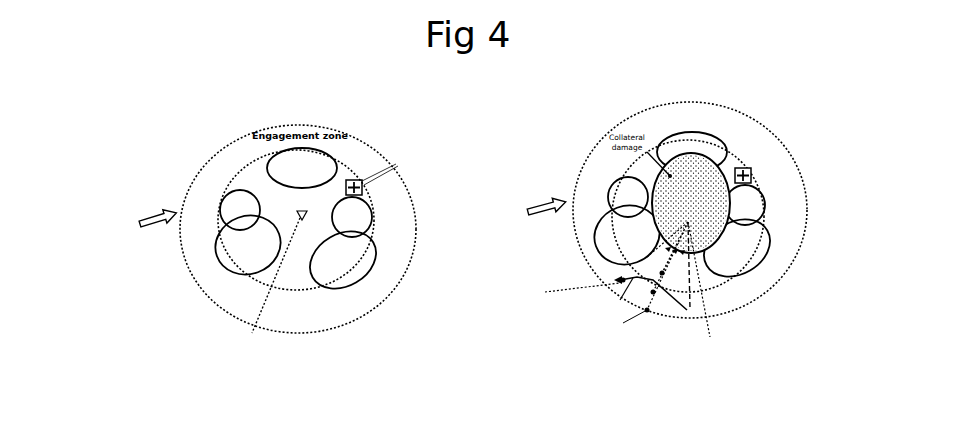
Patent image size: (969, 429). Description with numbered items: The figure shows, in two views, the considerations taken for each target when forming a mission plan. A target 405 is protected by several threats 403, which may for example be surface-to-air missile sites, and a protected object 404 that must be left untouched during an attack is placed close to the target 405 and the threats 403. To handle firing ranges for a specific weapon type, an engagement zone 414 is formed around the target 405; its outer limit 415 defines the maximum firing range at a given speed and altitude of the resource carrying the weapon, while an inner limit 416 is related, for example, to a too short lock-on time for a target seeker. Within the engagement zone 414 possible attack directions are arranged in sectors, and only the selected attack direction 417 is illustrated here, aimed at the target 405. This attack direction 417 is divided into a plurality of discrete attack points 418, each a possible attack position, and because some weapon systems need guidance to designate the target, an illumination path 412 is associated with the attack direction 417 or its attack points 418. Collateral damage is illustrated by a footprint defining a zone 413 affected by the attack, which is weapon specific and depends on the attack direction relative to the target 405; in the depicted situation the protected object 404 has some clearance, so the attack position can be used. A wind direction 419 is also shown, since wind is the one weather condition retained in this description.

The threats 403 is at (272, 160).
The protected object 404 is at (362, 182).
The target 405 is at (302, 218).
The illumination path 412 is at (633, 278).
The collateral damage zone 413 is at (720, 233).
The engagement zone 414 is at (787, 205).
The outer limit 415 is at (778, 133).
The inner limit 416 is at (750, 165).
The attack direction 417 is at (263, 302).
The discrete attack points 418 is at (652, 312).
The wind direction 419 is at (152, 213).